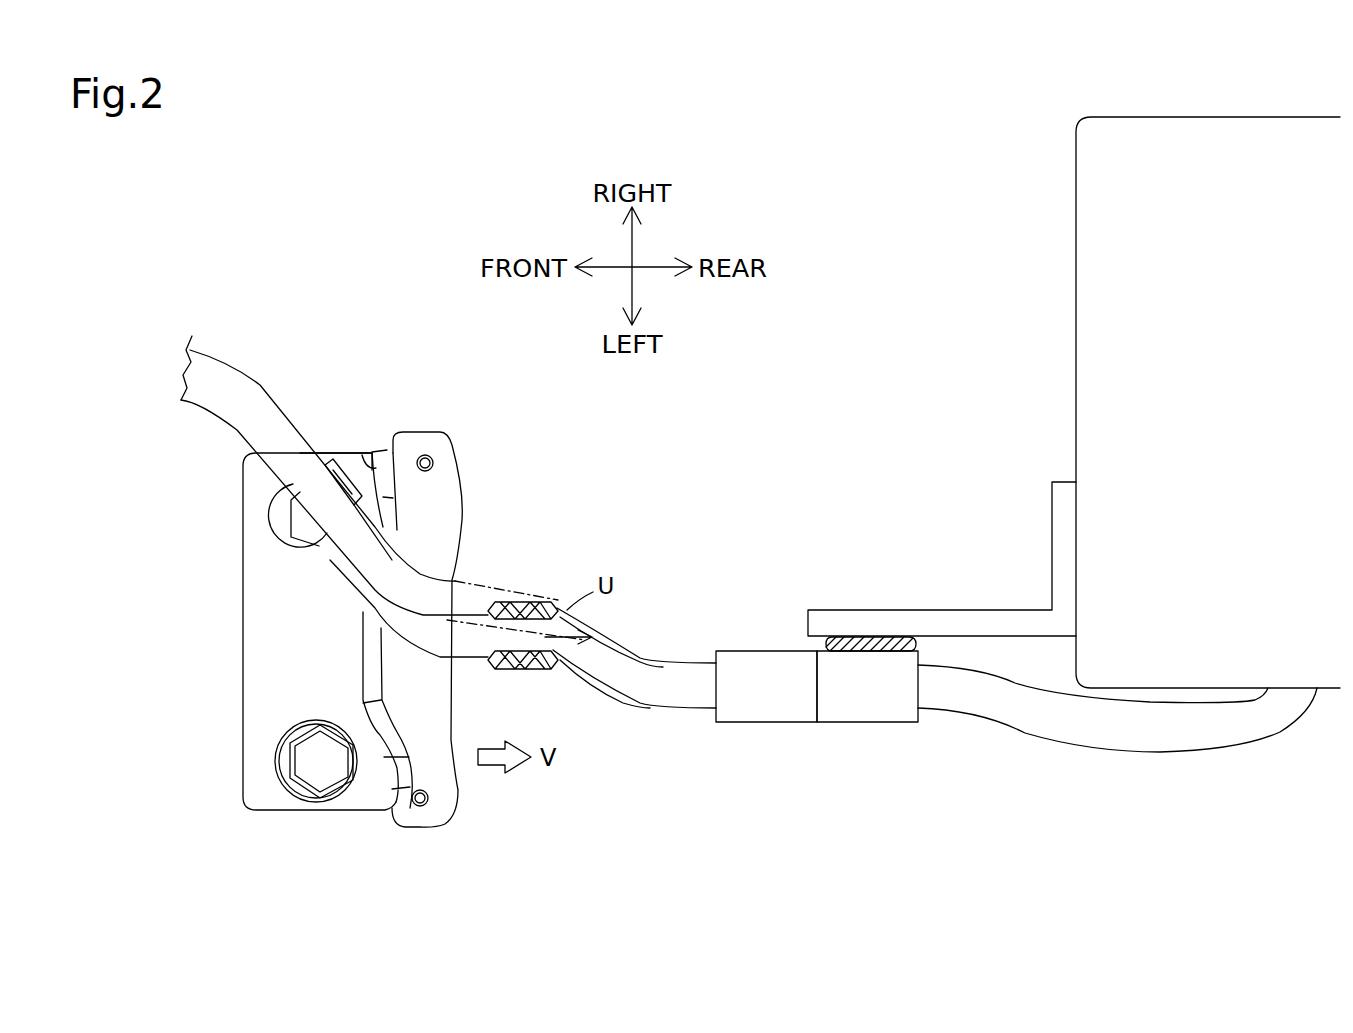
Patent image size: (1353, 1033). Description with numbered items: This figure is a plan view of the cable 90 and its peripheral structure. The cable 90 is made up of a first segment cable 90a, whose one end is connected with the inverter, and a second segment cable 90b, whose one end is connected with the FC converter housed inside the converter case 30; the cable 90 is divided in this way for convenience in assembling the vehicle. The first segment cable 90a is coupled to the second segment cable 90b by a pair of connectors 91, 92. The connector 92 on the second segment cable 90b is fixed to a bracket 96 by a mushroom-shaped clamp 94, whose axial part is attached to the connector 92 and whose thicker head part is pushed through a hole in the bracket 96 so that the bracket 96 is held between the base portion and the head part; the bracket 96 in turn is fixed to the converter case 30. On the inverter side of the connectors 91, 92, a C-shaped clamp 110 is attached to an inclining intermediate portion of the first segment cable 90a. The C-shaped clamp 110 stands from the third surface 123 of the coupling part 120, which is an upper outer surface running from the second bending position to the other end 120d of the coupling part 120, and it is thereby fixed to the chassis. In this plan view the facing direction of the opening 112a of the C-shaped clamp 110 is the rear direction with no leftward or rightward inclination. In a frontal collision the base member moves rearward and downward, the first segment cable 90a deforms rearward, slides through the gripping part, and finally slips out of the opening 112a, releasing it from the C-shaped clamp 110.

The converter case 30 is at (1076, 327).
The cable 90 is at (935, 693).
The first segment cable 90a is at (614, 708).
The second segment cable 90b is at (995, 738).
The connector 91 is at (767, 723).
The connector 92 is at (865, 723).
The mushroom-shaped clamp 94 is at (826, 642).
The bracket 96 is at (931, 610).
The C-shaped clamp 110 is at (518, 600).
The opening 112a is at (560, 633).
The coupling part 120 is at (262, 623).
The other end of coupling part 120d is at (366, 452).
The third surface 123 is at (450, 483).